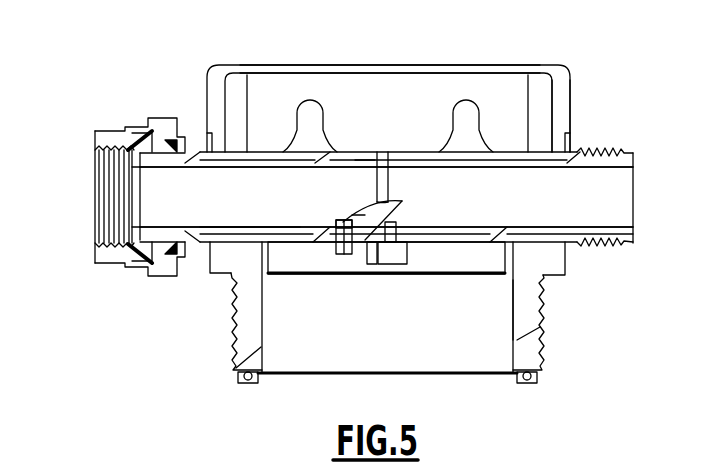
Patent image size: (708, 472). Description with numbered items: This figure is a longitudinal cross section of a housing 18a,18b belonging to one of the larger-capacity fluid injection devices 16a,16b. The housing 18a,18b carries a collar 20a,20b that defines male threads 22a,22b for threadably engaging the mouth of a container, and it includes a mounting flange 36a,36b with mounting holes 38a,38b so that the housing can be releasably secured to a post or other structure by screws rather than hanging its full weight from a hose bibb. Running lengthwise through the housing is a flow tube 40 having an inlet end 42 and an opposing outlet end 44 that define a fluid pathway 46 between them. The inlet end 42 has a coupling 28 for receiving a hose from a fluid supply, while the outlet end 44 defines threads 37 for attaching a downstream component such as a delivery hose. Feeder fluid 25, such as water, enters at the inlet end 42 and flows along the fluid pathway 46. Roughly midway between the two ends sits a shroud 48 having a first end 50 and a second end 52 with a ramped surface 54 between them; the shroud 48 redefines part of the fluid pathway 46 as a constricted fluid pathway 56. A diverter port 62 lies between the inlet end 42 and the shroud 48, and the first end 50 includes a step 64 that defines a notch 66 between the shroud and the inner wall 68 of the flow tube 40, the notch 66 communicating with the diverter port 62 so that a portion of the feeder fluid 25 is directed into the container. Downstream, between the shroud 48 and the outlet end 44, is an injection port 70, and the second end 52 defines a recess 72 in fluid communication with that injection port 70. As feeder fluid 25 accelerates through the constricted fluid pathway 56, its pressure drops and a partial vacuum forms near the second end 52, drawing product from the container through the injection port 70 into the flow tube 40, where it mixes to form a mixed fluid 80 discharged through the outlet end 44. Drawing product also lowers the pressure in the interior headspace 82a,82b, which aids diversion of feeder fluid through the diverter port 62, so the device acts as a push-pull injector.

The fluid injection device 16a,16b is at (336, 81).
The mounting flange 36a,36b is at (390, 45).
The housing 18a,18b is at (619, 116).
The mounting holes 38a,38b is at (448, 90).
The mixed fluid 80 is at (627, 187).
The threads 37 is at (613, 152).
The outlet end 44 is at (633, 237).
The inlet end 42 is at (150, 147).
The coupling 28 is at (142, 270).
The feeder fluid 25 is at (83, 197).
The fluid pathway 46 is at (215, 216).
The inner wall 68 is at (247, 227).
The male threads 22a,22b is at (436, 307).
The collar 20a,20b is at (449, 385).
The interior headspace 82a,82b is at (583, 305).
The diverter port 62 is at (337, 257).
The notch 66 is at (333, 228).
The injection port 70 is at (407, 250).
The step 64 is at (337, 222).
The first end 50 is at (340, 220).
The flow tube 40 is at (375, 157).
The constricted fluid pathway 56 is at (355, 160).
The shroud 48 is at (358, 195).
The second end 52 is at (402, 201).
The ramped surface 54 is at (378, 188).
The recess 72 is at (400, 208).